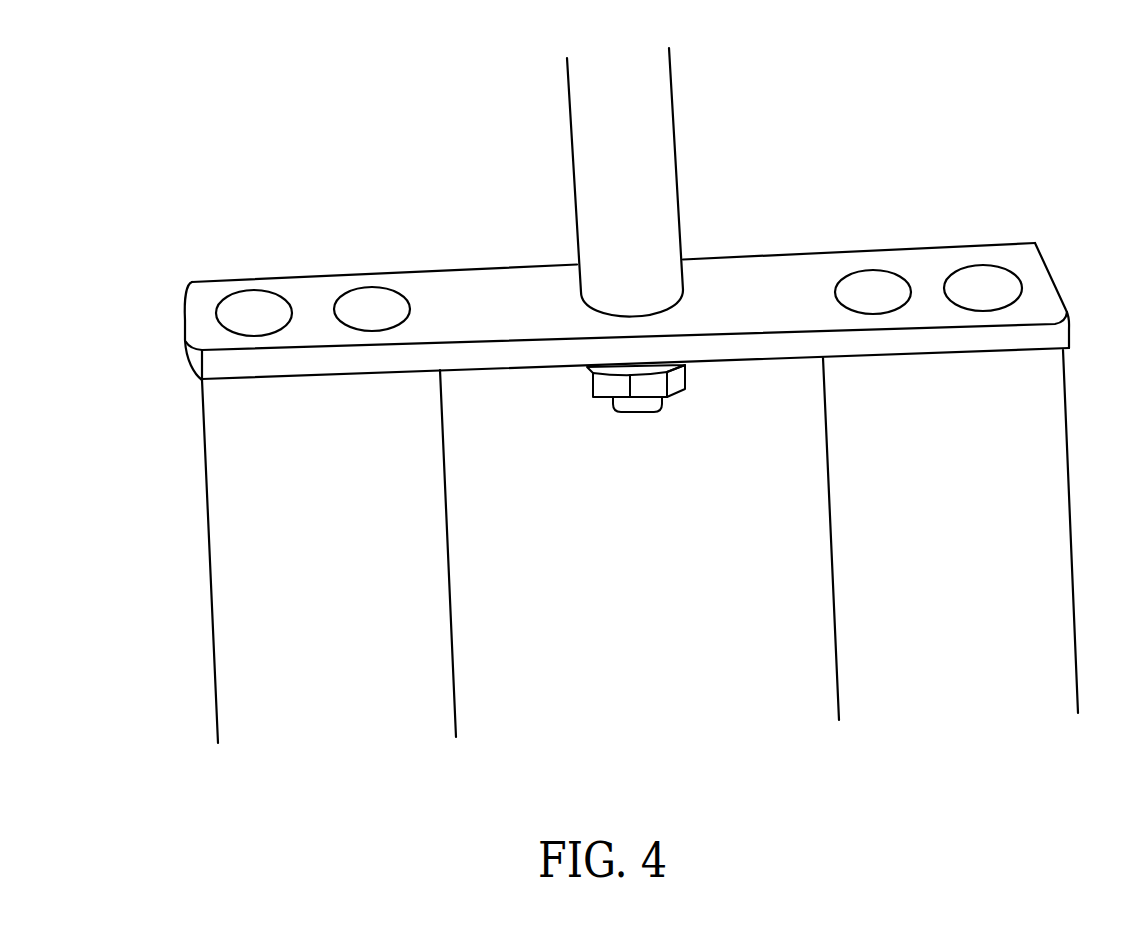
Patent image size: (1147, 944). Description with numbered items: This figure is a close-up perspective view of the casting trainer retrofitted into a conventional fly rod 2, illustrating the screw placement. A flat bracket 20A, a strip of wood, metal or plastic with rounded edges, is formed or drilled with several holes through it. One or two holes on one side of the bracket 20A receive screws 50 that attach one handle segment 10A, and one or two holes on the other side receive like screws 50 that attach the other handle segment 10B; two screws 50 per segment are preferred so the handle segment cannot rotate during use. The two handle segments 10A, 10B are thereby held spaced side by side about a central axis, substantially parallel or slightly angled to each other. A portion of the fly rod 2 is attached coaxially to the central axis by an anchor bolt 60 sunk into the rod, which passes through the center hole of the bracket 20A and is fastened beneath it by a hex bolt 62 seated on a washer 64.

The fly rod 2 is at (657, 148).
The bracket 20A is at (527, 293).
The screw 50 is at (257, 296).
The handle segment 10A is at (245, 502).
The handle segment 10B is at (1052, 573).
The anchor bolt 60 is at (650, 410).
The hex bolt 62 is at (653, 383).
The washer 64 is at (667, 363).